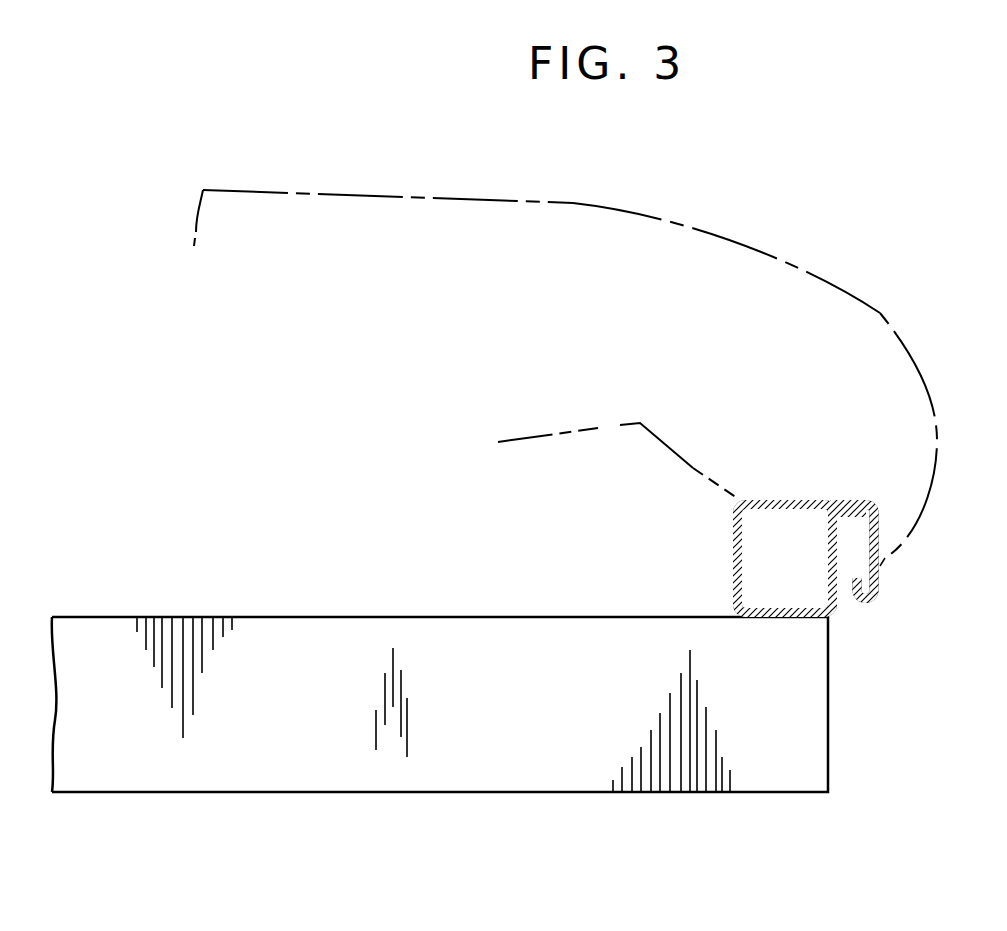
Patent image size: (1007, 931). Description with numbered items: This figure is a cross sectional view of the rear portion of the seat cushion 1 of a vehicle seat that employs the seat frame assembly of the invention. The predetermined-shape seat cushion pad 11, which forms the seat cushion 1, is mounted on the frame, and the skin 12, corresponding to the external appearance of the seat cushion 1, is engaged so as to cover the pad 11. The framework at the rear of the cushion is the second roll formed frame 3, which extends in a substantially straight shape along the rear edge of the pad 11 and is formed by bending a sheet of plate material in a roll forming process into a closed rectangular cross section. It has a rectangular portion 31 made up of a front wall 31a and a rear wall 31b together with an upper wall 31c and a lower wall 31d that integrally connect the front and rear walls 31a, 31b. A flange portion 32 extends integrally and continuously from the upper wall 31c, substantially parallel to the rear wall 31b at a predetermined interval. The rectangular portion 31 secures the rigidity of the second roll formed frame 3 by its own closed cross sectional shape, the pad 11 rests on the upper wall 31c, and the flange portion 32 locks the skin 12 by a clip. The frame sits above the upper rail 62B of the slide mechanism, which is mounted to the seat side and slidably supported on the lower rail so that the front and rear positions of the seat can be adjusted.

The seat cushion 1 is at (896, 318).
The seat cushion pad 11 is at (752, 305).
The skin 12 is at (573, 203).
The second roll formed frame 3 is at (780, 554).
The rectangular portion 31 is at (794, 554).
The front wall 31a is at (732, 502).
The rear wall 31b is at (835, 573).
The upper wall 31c is at (785, 502).
The lower wall 31d is at (779, 498).
The flange portion 32 is at (882, 546).
The upper rail 62B is at (498, 755).